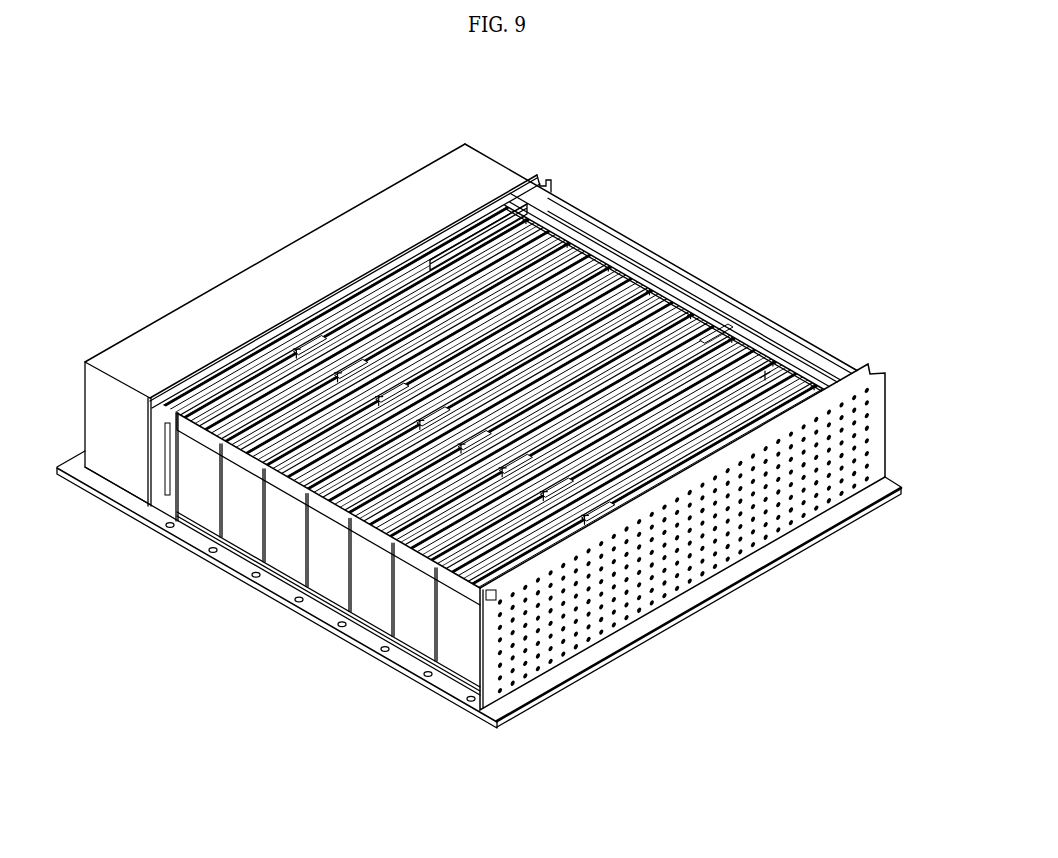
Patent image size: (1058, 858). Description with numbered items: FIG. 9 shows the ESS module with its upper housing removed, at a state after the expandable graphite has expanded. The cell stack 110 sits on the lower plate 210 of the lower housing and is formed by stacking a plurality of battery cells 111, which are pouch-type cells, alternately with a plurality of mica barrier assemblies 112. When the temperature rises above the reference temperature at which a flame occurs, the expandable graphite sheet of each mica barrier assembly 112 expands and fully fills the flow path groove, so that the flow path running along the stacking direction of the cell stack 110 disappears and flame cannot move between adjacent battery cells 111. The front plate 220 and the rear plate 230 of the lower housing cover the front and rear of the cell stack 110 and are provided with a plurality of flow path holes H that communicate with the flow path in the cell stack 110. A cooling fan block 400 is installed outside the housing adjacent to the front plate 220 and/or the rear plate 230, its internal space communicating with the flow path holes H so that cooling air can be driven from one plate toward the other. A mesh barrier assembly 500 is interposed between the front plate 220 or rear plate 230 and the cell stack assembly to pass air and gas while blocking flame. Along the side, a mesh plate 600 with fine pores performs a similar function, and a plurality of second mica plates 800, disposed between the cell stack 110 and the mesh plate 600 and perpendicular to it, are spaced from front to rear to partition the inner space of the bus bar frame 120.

The cell stack 110 is at (653, 367).
The battery cell 111 is at (713, 330).
The mica barrier assembly 112 is at (767, 373).
The bus bar frame 120 is at (283, 575).
The lower plate 210 is at (452, 686).
The front plate 220 is at (577, 183).
The rear plate 230 is at (715, 537).
The cooling fan block 400 is at (410, 185).
The mesh barrier assembly 500 is at (465, 236).
The mesh plate 600 is at (333, 573).
The second mica plate 800 is at (390, 605).
The flow path hole H is at (867, 452).